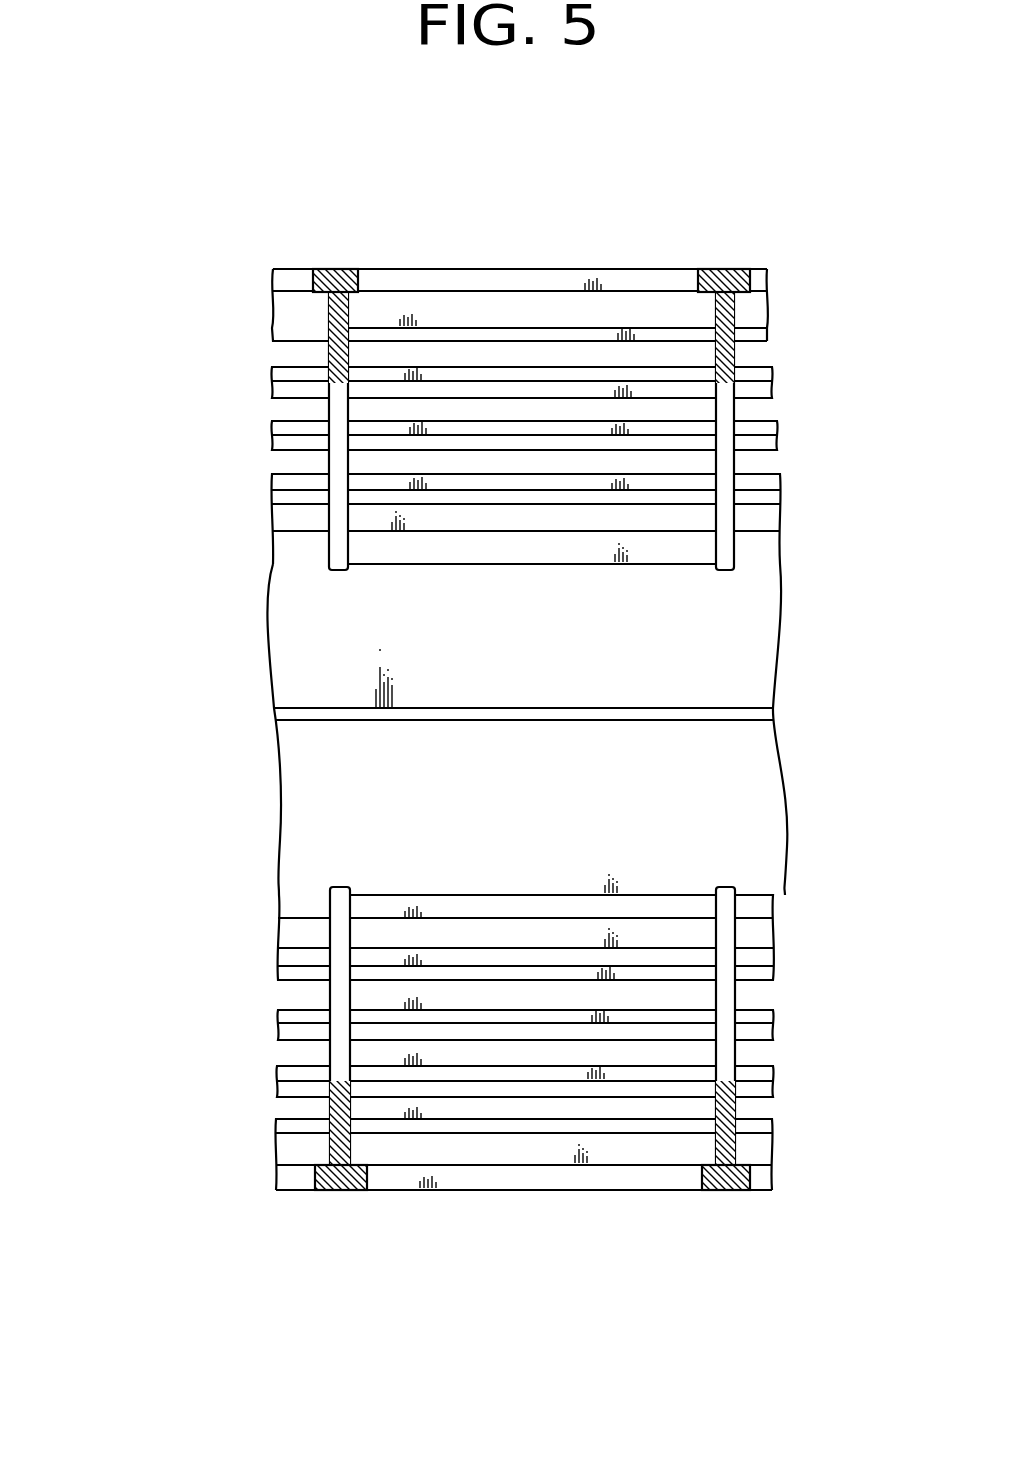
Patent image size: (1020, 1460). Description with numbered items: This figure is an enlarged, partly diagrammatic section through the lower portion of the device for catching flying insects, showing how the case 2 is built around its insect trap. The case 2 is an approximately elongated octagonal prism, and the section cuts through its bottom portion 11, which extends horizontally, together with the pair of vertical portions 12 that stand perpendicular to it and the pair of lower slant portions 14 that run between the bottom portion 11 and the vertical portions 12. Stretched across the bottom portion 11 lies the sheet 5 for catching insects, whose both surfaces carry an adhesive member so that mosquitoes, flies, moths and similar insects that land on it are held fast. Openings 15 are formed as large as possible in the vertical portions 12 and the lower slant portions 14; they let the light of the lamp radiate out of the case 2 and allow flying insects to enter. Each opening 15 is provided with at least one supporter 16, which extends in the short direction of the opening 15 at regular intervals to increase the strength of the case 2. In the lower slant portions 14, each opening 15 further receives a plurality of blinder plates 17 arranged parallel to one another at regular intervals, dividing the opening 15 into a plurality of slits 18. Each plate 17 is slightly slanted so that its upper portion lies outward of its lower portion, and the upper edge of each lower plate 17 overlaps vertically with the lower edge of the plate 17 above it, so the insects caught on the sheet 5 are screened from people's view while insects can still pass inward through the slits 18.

The case 2 is at (722, 268).
The sheet for catching insects 5 is at (582, 708).
The bottom portion 11 is at (727, 636).
The vertical portions 12 is at (620, 268).
The lower slant portions 14 is at (760, 517).
The openings 15 is at (470, 278).
The supporter 16 is at (342, 268).
The blinder plates 17 is at (273, 333).
The slits 18 is at (280, 360).